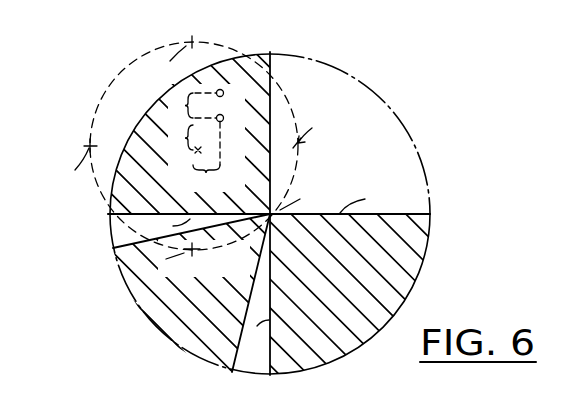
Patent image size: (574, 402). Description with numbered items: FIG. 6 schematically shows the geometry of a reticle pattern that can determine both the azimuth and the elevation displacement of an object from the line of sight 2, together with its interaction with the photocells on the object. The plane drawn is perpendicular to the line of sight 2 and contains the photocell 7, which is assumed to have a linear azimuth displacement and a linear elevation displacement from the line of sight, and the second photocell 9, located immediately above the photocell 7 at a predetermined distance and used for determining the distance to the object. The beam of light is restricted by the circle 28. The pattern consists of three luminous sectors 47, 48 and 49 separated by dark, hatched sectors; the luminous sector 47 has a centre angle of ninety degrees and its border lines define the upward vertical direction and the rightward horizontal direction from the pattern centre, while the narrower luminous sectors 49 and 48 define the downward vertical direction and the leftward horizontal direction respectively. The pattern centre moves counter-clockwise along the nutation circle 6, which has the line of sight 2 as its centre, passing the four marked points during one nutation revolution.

The line of sight 2 is at (195, 156).
The nutation circle 6 is at (287, 95).
The photocell 7 is at (224, 118).
The second photocell 9 is at (224, 93).
The circle 28 is at (415, 146).
The luminous sector 47 is at (388, 126).
The luminous sector 48 is at (113, 236).
The luminous sector 49 is at (258, 378).